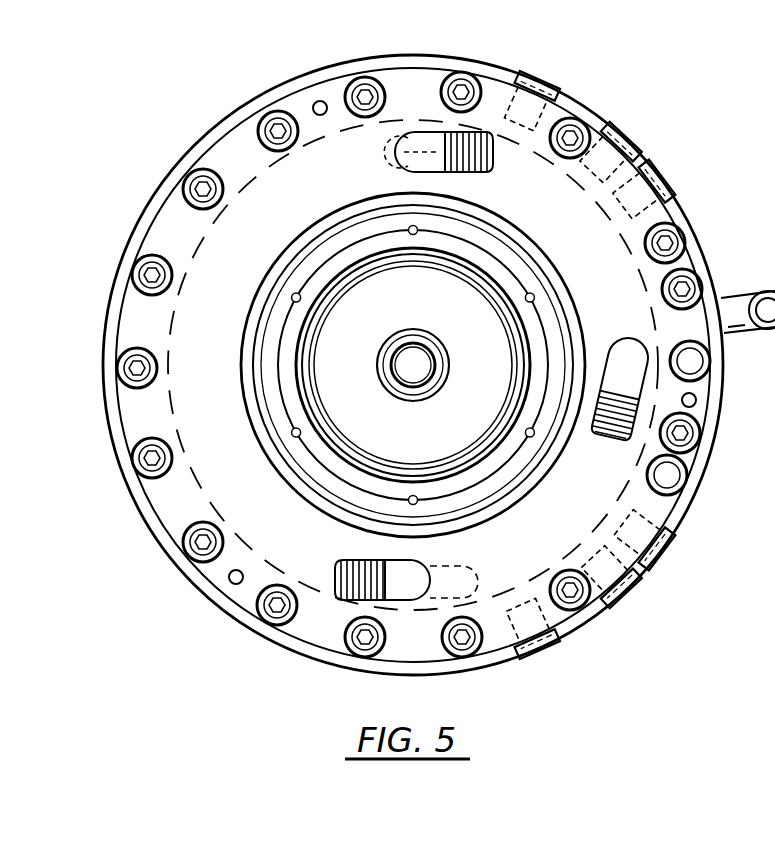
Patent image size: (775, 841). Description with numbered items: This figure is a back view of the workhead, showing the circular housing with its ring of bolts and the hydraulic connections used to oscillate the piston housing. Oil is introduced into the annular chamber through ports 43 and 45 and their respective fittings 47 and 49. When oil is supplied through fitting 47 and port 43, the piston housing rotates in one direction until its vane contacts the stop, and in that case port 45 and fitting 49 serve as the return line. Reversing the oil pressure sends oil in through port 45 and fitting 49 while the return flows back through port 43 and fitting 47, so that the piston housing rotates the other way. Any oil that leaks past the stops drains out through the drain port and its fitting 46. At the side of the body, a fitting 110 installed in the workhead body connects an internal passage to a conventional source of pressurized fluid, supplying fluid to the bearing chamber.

The port 43 is at (396, 162).
The port 45 is at (432, 565).
The fitting 46 is at (626, 345).
The fitting 47 is at (432, 140).
The fitting 49 is at (393, 600).
The fitting 110 is at (740, 292).